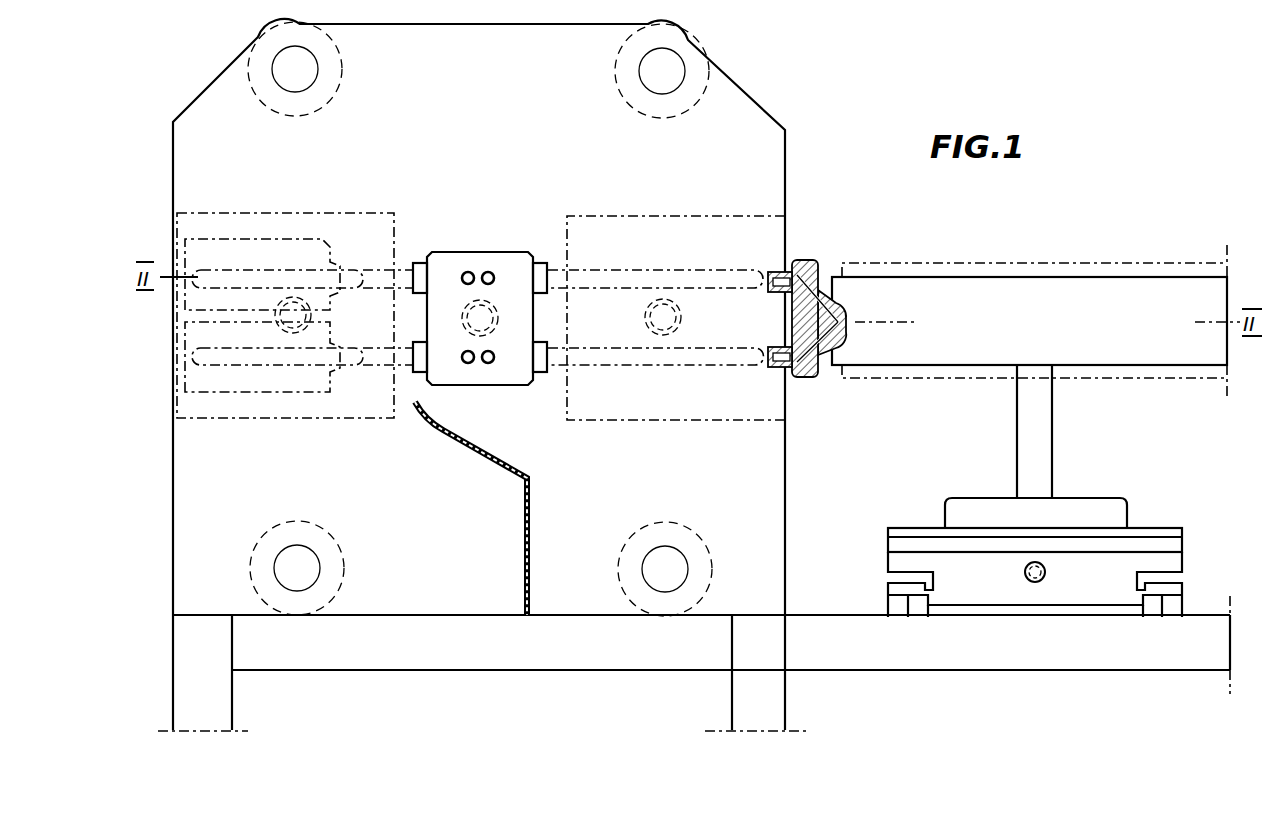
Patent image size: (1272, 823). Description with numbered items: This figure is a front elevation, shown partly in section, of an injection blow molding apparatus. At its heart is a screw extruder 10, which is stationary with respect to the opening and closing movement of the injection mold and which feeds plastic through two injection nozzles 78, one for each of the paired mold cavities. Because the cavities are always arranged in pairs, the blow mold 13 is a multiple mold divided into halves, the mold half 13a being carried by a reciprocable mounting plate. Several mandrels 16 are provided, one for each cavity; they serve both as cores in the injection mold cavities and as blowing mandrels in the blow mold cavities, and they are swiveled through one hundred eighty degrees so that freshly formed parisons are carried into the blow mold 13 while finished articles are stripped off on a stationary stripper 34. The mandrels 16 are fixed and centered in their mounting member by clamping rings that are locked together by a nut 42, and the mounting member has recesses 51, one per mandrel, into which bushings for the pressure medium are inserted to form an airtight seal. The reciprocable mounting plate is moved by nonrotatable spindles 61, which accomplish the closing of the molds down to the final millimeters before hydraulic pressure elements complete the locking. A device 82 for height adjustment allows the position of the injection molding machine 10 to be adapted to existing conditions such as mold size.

The screw extruder 10 is at (891, 348).
The blow mold 13 is at (230, 393).
The blow mold half 13a is at (235, 239).
The mandrel 16 is at (675, 365).
The stationary stripper 34 is at (441, 430).
The nut 42 is at (541, 365).
The recess 51 is at (490, 362).
The spindle 61 is at (300, 327).
The injection nozzle 78 is at (783, 372).
The height adjustment device 82 is at (1052, 437).